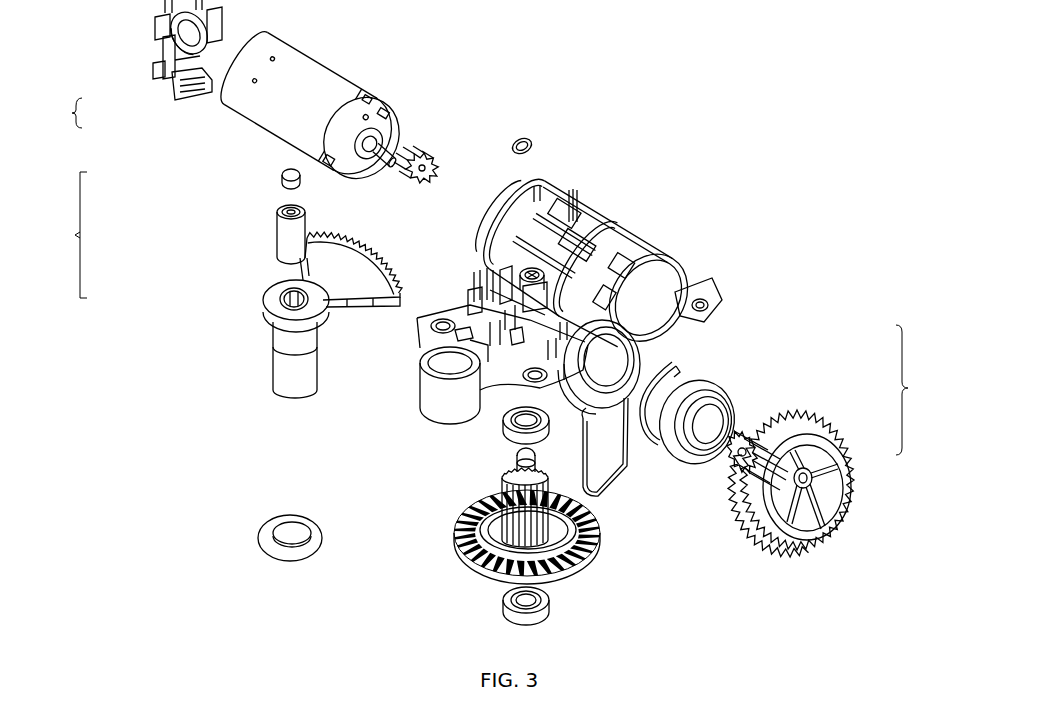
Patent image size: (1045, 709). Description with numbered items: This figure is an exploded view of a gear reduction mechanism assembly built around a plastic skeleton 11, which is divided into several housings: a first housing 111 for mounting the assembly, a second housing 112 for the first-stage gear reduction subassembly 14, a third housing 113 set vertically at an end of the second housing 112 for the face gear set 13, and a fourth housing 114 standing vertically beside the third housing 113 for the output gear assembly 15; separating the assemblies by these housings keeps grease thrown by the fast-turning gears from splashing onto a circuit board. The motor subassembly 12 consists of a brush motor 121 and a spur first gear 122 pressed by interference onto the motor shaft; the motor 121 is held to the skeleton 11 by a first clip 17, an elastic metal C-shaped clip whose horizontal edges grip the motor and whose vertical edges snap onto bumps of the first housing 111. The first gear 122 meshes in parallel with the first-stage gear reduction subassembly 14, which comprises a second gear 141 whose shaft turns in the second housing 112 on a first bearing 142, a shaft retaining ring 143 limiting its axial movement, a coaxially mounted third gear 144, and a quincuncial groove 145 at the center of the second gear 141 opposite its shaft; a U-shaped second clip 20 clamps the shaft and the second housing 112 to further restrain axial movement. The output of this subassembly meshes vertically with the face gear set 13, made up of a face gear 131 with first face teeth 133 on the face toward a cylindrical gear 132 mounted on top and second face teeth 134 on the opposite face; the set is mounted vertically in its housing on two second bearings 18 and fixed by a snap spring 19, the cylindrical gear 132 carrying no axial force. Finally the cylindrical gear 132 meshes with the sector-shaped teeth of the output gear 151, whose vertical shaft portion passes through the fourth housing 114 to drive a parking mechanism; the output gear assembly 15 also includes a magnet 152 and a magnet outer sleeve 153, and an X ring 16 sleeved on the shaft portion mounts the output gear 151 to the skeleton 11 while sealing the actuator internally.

The skeleton 11 is at (651, 292).
The first housing 111 is at (627, 246).
The second housing 112 is at (645, 348).
The third housing 113 is at (530, 282).
The fourth housing 114 is at (437, 390).
The motor subassembly 12 is at (240, 110).
The motor 121 is at (327, 163).
The first gear 122 is at (402, 172).
The face gear set 13 is at (344, 500).
The face gear 131 is at (577, 563).
The cylindrical gear 132 is at (545, 507).
The first face teeth 133 is at (460, 517).
The second face teeth 134 is at (470, 563).
The first-stage gear reduction subassembly 14 is at (786, 436).
The second gear 141 is at (822, 422).
The first bearing 142 is at (727, 388).
The shaft retaining ring 143 is at (667, 371).
The third gear 144 is at (760, 430).
The quincuncial groove 145 is at (805, 484).
The output gear assembly 15 is at (225, 281).
The output gear 151 is at (263, 313).
The magnet 152 is at (282, 180).
The magnet outer sleeve 153 is at (278, 236).
The X ring 16 is at (258, 537).
The first clip 17 is at (162, 52).
The second bearing 18 is at (502, 608).
The snap spring 19 is at (532, 144).
The second clip 20 is at (577, 447).